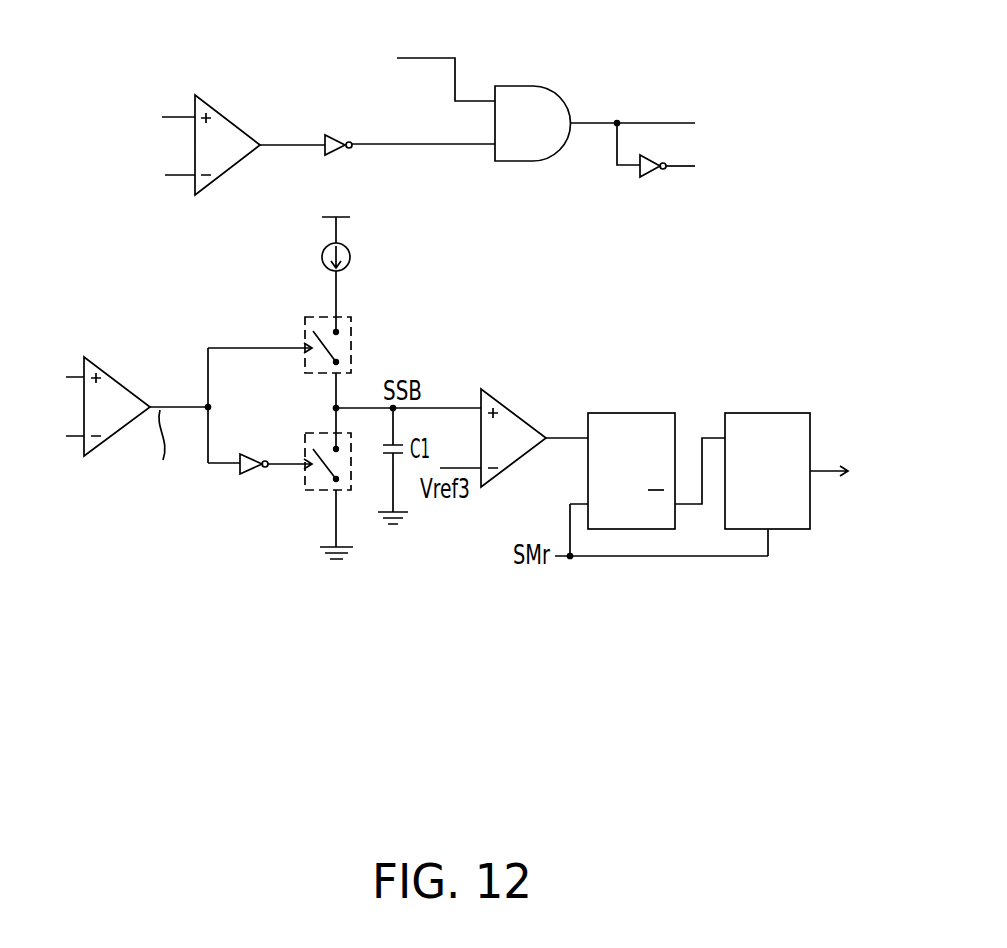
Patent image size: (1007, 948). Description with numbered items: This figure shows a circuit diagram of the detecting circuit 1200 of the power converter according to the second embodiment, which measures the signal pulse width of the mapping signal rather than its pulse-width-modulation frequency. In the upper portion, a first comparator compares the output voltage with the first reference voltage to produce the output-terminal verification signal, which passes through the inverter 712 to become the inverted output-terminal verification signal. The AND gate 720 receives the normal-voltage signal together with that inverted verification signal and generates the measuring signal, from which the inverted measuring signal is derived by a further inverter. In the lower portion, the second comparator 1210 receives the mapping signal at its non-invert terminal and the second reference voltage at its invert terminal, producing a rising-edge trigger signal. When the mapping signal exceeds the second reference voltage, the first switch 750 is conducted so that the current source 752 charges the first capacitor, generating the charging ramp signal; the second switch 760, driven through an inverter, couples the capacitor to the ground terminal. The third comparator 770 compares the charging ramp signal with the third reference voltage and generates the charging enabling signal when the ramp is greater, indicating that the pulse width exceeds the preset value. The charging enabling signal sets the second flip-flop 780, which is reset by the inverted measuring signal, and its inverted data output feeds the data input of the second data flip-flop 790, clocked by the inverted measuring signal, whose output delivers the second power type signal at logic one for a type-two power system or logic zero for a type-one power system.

The AND gate 720 is at (236, 115).
The inverter 712 is at (336, 128).
The second comparator 1210 is at (125, 380).
The current source 752 is at (352, 253).
The first switch 750 is at (354, 326).
The second switch 760 is at (303, 486).
The third comparator 770 is at (522, 412).
The second flip-flop 780 is at (633, 412).
The second data flip-flop 790 is at (768, 412).
The detecting circuit 1200 is at (798, 691).